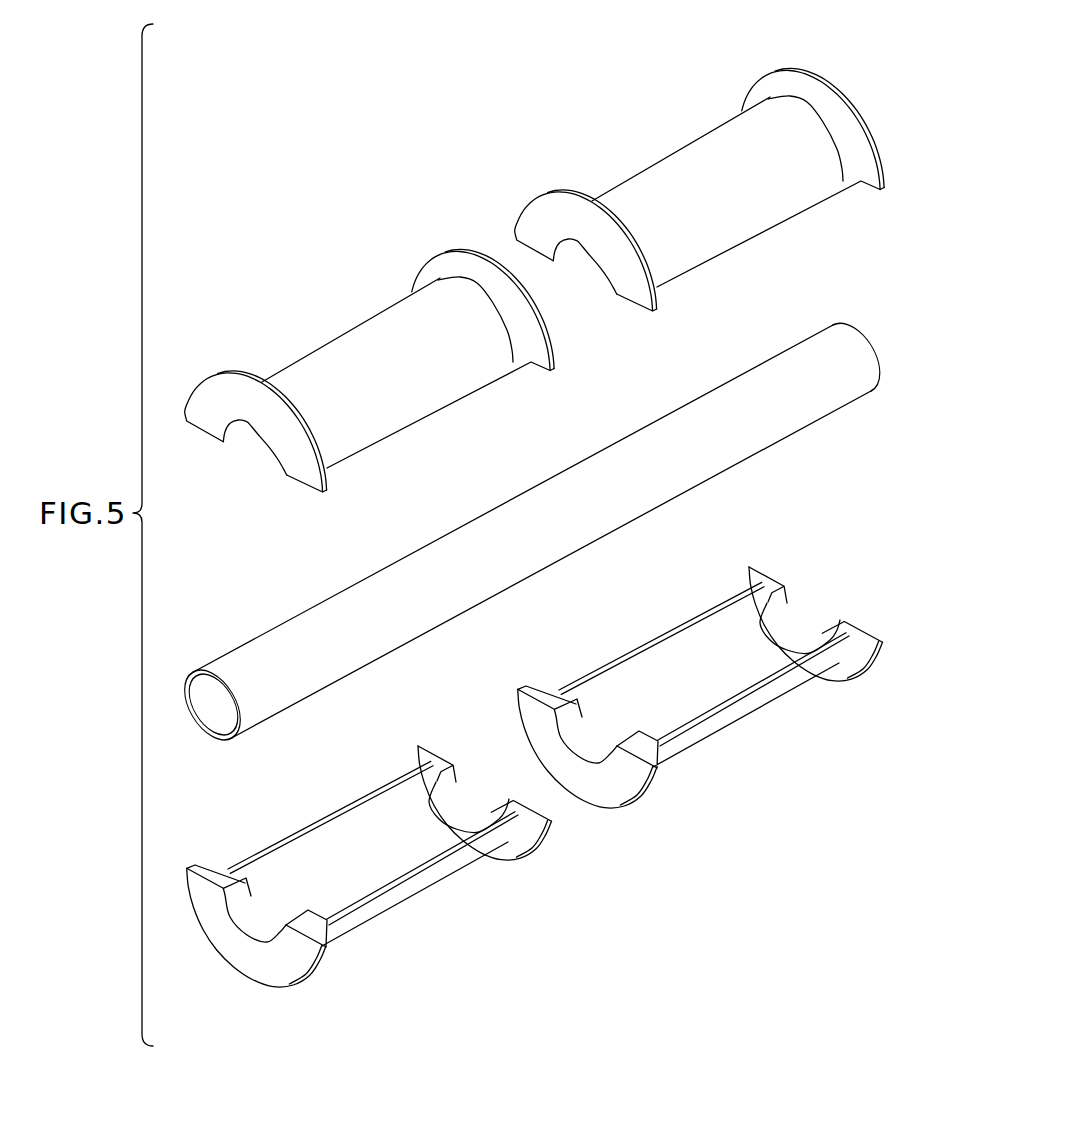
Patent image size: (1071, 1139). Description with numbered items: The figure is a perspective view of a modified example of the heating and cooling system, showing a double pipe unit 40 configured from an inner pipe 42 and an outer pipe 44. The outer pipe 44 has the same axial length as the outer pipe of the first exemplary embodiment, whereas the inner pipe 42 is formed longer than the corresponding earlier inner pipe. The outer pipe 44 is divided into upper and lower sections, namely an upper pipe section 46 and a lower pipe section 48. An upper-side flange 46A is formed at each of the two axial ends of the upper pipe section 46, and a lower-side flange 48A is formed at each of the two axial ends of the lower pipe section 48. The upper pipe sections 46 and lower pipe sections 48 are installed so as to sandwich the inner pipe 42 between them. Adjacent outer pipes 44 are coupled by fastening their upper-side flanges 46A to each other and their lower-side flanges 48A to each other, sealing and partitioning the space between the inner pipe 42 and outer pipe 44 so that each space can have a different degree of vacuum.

The double pipe unit 40 is at (454, 113).
The inner pipe 42 is at (221, 656).
The outer pipe 44 is at (532, 535).
The upper pipe section 46 is at (337, 325).
The upper-side flange 46A is at (191, 388).
The lower pipe section 48 is at (437, 900).
The lower-side flange 48A is at (243, 984).